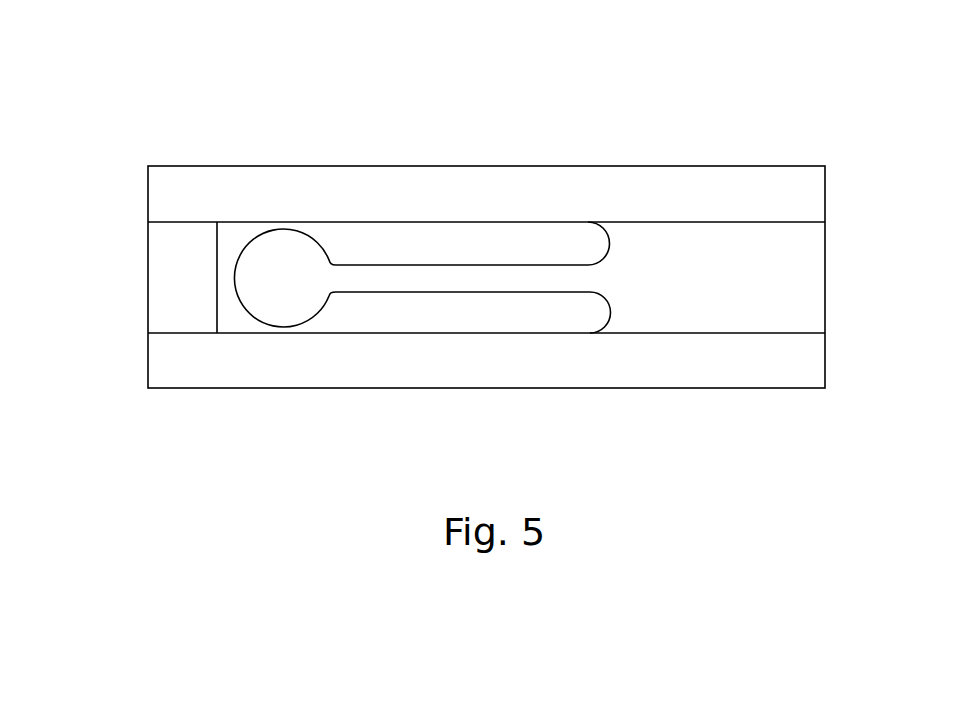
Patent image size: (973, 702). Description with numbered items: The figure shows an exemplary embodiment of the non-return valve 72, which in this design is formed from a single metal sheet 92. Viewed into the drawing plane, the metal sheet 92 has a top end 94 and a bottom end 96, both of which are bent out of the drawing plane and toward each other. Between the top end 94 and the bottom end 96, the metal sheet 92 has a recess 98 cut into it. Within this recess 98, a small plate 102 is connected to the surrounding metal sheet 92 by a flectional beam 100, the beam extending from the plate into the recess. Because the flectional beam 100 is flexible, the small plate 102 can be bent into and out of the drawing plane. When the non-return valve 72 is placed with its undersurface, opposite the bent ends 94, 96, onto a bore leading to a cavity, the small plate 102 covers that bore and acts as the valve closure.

The non-return valve 72 is at (852, 121).
The top end 94 is at (803, 192).
The metal sheet 92 is at (810, 273).
The bottom end 96 is at (811, 348).
The recess 98 is at (504, 246).
The flectional beam 100 is at (378, 275).
The small plate 102 is at (284, 245).